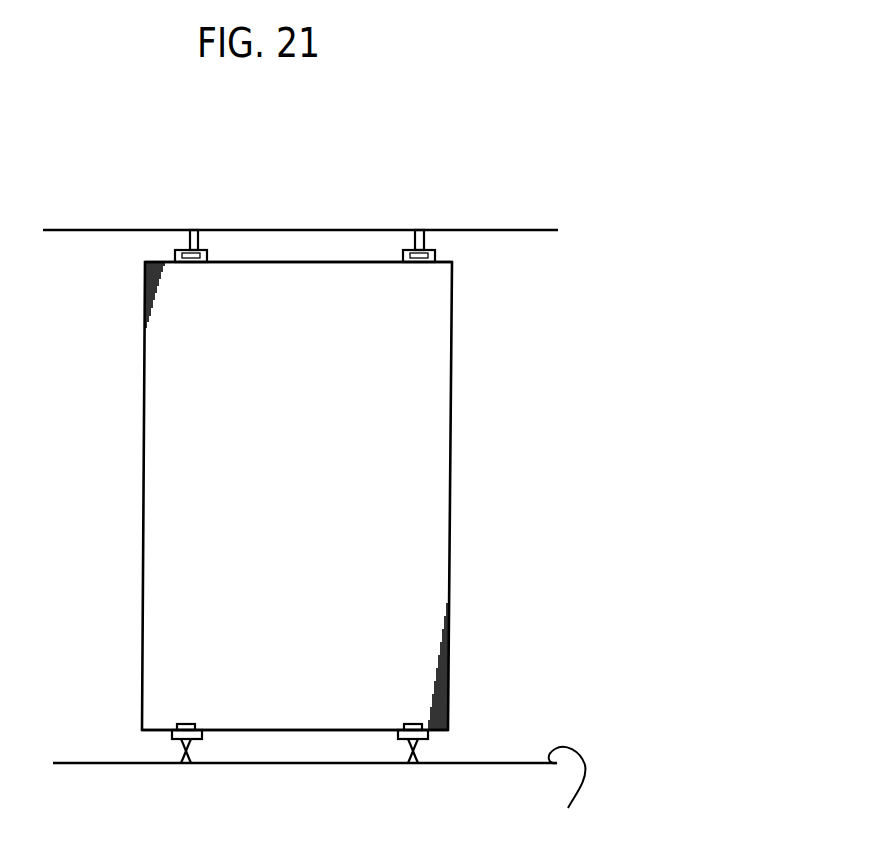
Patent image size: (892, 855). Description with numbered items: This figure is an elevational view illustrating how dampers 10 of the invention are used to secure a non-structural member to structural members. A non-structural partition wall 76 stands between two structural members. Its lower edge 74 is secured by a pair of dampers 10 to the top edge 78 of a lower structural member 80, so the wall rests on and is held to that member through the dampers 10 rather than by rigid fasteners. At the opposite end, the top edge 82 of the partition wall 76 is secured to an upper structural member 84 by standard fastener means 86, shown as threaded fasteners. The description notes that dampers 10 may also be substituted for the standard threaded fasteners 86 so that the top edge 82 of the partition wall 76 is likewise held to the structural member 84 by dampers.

The structural member 84 is at (306, 203).
The structural member 80 is at (311, 830).
The top edge 78 is at (559, 790).
The non-structural partition wall 76 is at (435, 495).
The top edge 82 is at (307, 266).
The lower edge 74 is at (298, 730).
The standard fastener means 86 is at (190, 237).
The damper 10 is at (180, 748).